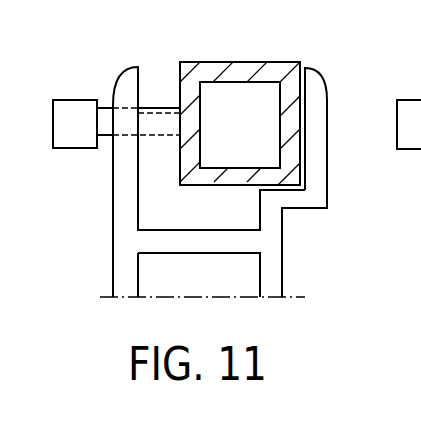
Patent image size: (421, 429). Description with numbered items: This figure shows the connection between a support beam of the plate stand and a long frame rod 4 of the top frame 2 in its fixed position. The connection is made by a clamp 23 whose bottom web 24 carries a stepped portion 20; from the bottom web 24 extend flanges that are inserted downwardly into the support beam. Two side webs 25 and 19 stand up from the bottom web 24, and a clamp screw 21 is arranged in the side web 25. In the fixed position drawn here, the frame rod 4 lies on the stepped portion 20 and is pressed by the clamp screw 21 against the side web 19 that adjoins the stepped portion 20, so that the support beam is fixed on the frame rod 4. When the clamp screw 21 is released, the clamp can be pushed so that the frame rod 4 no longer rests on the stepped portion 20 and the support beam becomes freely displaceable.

The top frame 2 is at (295, 61).
The frame rod 4 is at (237, 70).
The side web 19 is at (313, 113).
The stepped portion 20 is at (295, 197).
The clamp screw 21 is at (104, 116).
The clamp 23 is at (162, 237).
The bottom web 24 is at (217, 235).
The side web 25 is at (122, 183).